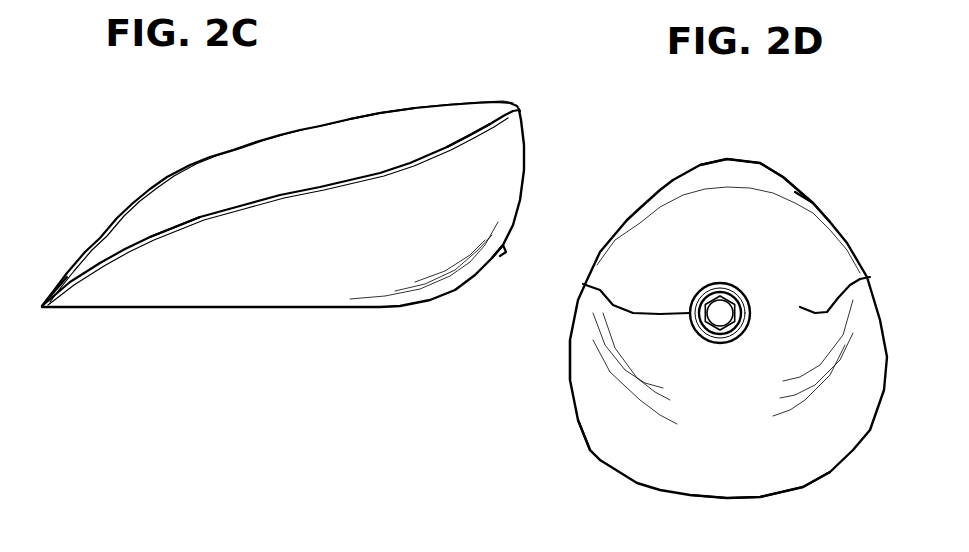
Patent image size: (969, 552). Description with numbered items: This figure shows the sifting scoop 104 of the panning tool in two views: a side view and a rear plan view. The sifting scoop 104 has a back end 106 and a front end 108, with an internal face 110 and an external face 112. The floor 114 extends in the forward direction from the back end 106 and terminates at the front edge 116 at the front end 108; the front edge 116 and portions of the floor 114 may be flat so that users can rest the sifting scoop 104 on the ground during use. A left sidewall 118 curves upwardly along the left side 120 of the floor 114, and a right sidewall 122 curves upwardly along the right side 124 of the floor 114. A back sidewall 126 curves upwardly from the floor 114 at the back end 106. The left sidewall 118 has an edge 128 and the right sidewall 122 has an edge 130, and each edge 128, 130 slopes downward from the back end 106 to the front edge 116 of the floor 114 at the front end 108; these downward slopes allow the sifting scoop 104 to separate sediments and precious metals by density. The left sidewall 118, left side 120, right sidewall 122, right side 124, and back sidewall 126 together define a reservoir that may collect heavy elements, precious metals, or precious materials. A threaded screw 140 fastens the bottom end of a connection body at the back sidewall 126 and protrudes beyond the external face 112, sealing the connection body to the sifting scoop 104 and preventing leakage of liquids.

In FIG. 2C, the sifting scoop 104 is at (80, 336).
In FIG. 2D, the sifting scoop 104 is at (552, 452).
In FIG. 2C, the back end 106 is at (283, 249).
In FIG. 2D, the back end 106 is at (830, 498).
In FIG. 2C, the front end 108 is at (280, 208).
In FIG. 2D, the front end 108 is at (820, 151).
In FIG. 2C, the internal face 110 is at (401, 83).
In FIG. 2C, the external face 112 is at (214, 353).
In FIG. 2D, the external face 112 is at (753, 328).
In FIG. 2D, the floor 114 is at (853, 186).
In FIG. 2C, the front edge 116 is at (59, 236).
In FIG. 2D, the front edge 116 is at (711, 129).
In FIG. 2C, the left sidewall 118 is at (502, 83).
In FIG. 2D, the left sidewall 118 is at (522, 379).
In FIG. 2D, the left side 120 is at (647, 273).
In FIG. 2C, the right sidewall 122 is at (289, 306).
In FIG. 2D, the right sidewall 122 is at (764, 378).
In FIG. 2D, the right side 124 is at (760, 230).
In FIG. 2C, the back sidewall 126 is at (424, 277).
In FIG. 2D, the back sidewall 126 is at (691, 493).
In FIG. 2C, the edge 128 is at (281, 194).
In FIG. 2C, the edge 130 is at (135, 316).
In FIG. 2C, the threaded screw 140 is at (557, 168).
In FIG. 2D, the threaded screw 140 is at (683, 294).